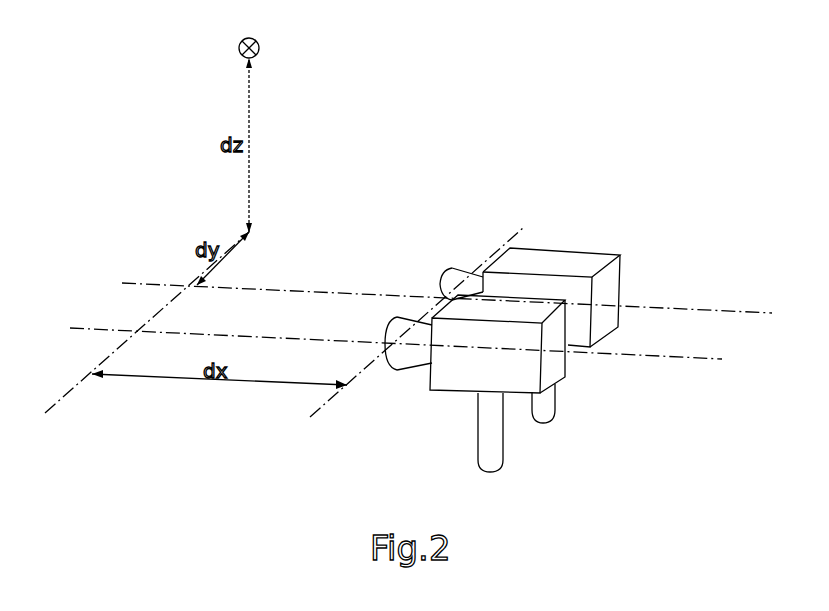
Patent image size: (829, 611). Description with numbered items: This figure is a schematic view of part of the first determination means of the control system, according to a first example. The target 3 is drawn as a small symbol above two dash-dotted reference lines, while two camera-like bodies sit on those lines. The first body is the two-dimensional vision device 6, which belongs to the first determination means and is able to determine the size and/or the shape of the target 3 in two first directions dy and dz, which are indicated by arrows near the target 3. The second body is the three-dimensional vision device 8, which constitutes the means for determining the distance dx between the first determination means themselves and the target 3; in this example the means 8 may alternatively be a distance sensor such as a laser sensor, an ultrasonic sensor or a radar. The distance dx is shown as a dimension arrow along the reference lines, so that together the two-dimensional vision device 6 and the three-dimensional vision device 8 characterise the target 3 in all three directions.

The target 3 is at (259, 48).
The two-dimensional vision device 6 is at (618, 270).
The three-dimensional vision device 8 is at (447, 380).